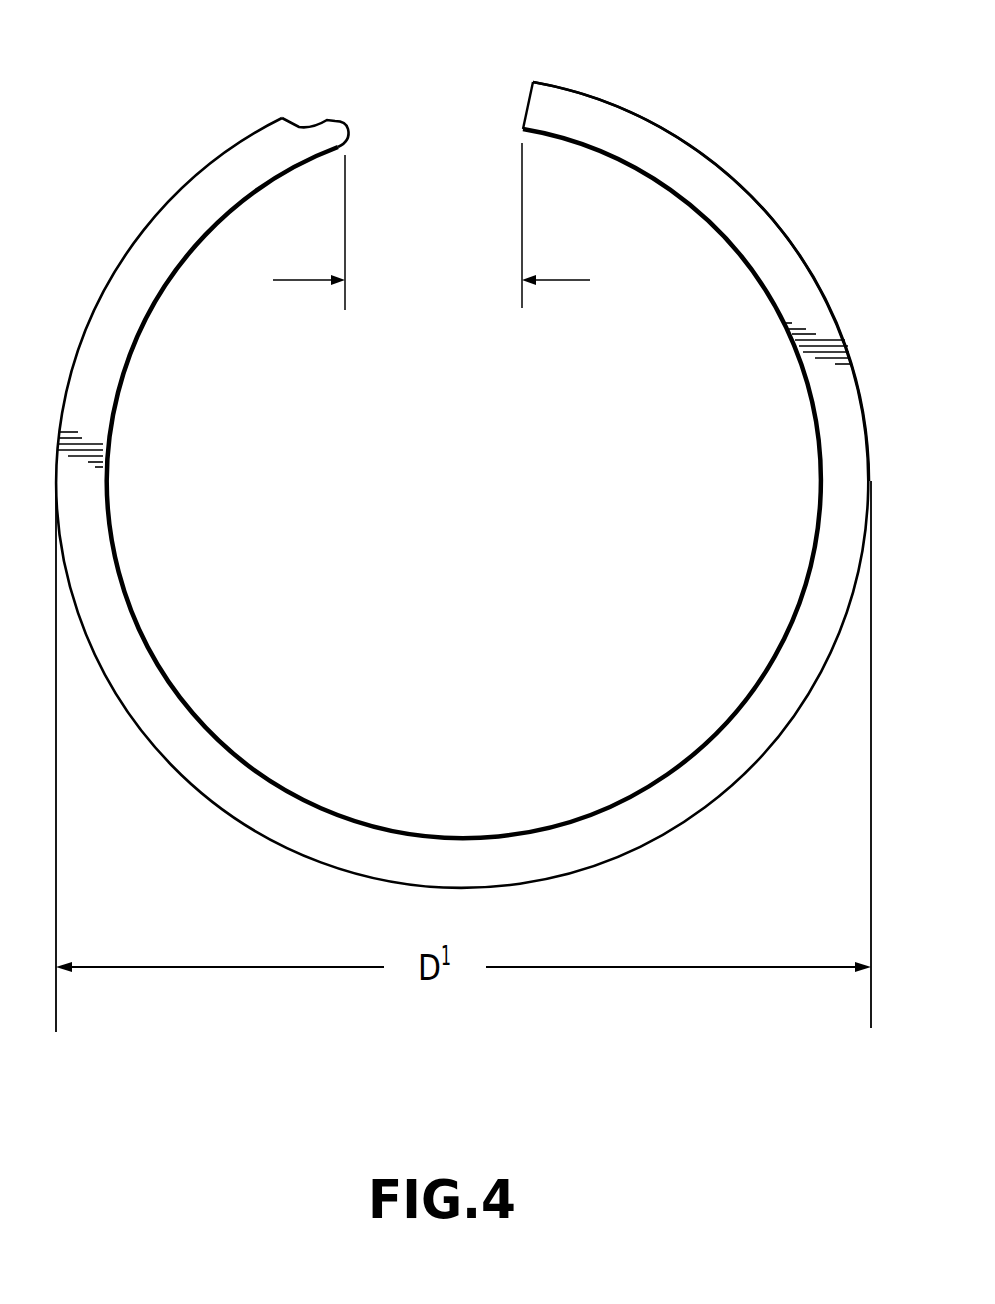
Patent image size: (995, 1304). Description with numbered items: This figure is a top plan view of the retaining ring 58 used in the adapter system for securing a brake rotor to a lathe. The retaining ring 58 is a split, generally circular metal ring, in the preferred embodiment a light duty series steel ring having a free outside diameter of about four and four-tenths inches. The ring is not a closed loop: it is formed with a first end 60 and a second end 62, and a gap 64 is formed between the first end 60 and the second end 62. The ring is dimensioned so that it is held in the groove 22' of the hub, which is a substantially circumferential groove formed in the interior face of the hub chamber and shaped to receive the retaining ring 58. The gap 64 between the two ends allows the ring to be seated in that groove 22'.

The groove 22' is at (462, 477).
The retaining ring 58 is at (707, 150).
The first end 60 is at (527, 96).
The second end 62 is at (341, 120).
The gap 64 is at (451, 226).